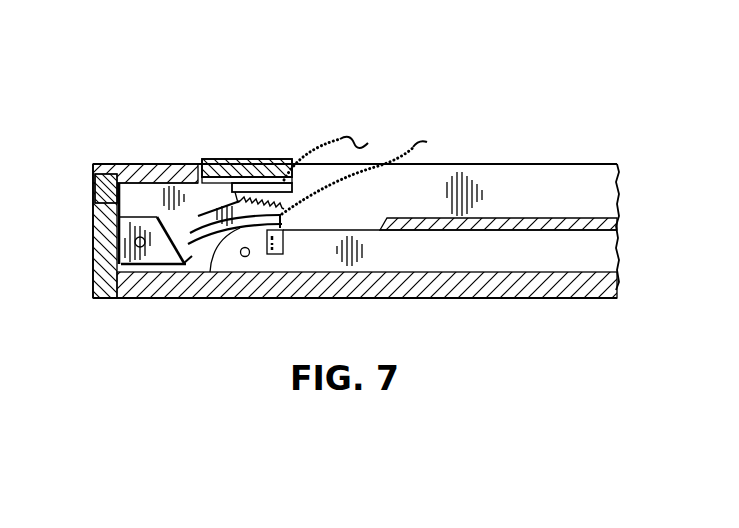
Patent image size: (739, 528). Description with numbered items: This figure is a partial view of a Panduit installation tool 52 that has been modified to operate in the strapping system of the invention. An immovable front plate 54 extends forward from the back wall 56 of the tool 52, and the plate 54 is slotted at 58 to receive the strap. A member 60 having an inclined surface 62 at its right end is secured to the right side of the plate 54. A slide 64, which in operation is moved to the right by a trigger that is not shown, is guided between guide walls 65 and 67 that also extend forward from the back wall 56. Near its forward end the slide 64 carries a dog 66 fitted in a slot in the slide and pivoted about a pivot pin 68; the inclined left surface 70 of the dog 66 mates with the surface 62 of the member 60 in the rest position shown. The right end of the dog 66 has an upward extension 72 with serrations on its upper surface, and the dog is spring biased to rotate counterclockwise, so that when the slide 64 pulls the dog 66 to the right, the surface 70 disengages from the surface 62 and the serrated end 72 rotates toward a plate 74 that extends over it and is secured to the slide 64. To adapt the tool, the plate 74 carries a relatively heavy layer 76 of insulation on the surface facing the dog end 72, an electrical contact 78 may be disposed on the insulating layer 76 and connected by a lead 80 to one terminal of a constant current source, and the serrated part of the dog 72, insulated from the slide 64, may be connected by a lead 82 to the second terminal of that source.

The installation tool 52 is at (288, 100).
The front plate 54 is at (95, 219).
The back wall 56 is at (532, 211).
The slot 58 is at (94, 200).
The member 60 is at (124, 266).
The inclined surface 62 is at (152, 280).
The slide 64 is at (456, 265).
The guide wall 65 is at (615, 224).
The dog 66 is at (184, 210).
The guide wall 67 is at (412, 276).
The pivot pin 68 is at (247, 257).
The left surface of dog 70 is at (198, 216).
The upward extension 72 is at (260, 180).
The plate 74 is at (205, 158).
The layer of insulation 76 is at (230, 176).
The electrical contact 78 is at (296, 157).
The lead 80 is at (369, 148).
The lead 82 is at (370, 175).